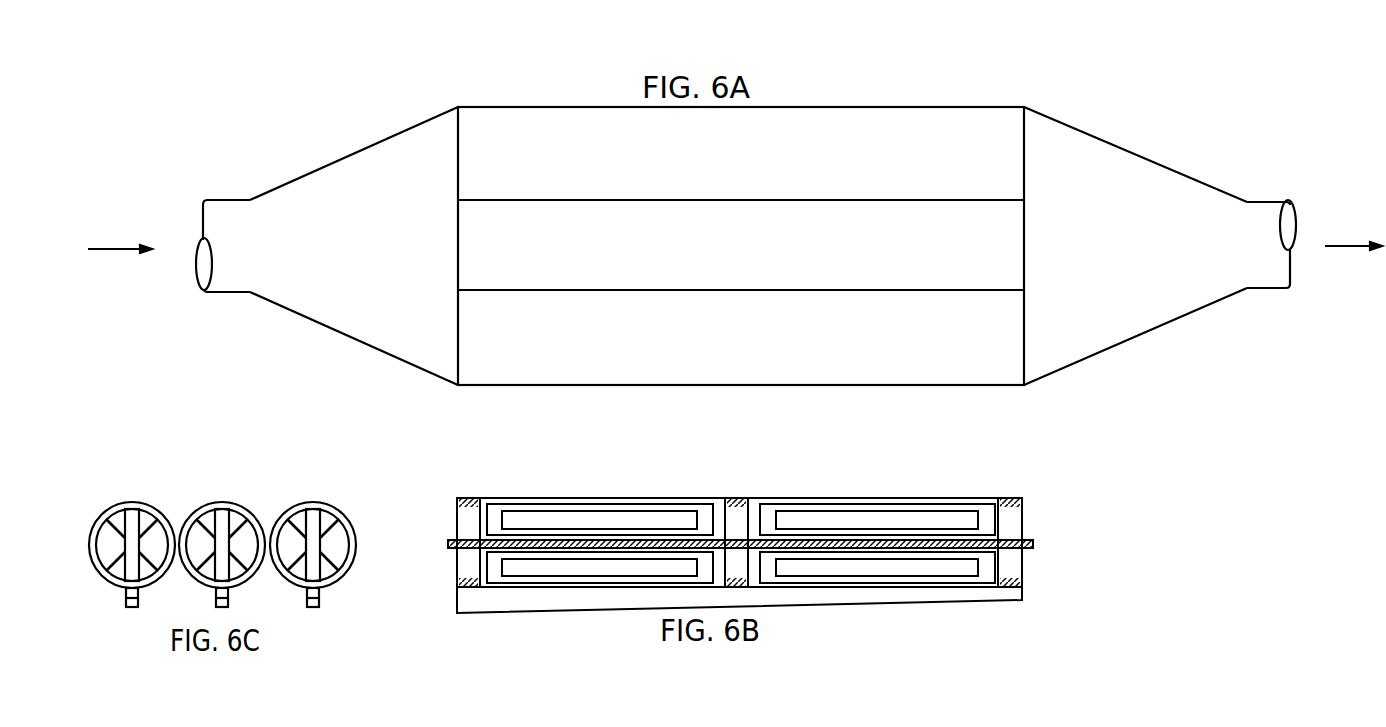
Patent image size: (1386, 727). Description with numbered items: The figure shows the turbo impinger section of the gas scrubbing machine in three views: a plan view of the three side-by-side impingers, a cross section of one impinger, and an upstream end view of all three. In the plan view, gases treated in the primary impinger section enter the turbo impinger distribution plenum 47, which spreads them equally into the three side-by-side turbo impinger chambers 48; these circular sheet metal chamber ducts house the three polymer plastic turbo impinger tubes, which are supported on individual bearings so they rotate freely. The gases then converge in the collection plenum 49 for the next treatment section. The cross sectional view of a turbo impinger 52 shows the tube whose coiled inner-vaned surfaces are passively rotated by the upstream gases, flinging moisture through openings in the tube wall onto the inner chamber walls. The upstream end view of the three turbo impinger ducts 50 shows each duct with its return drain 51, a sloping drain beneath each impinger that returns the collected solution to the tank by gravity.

In FIG. 6A, the turbo impinger distribution plenum 47 is at (335, 182).
In FIG. 6A, the turbo impinger chambers 48 is at (947, 337).
In FIG. 6A, the collection plenum 49 is at (1085, 163).
In FIG. 6C, the turbo impinger ducts 50 is at (283, 505).
In FIG. 6B, the return drain 51 is at (473, 603).
In FIG. 6C, the return drain 51 is at (320, 600).
In FIG. 6B, the turbo impinger 52 is at (917, 496).